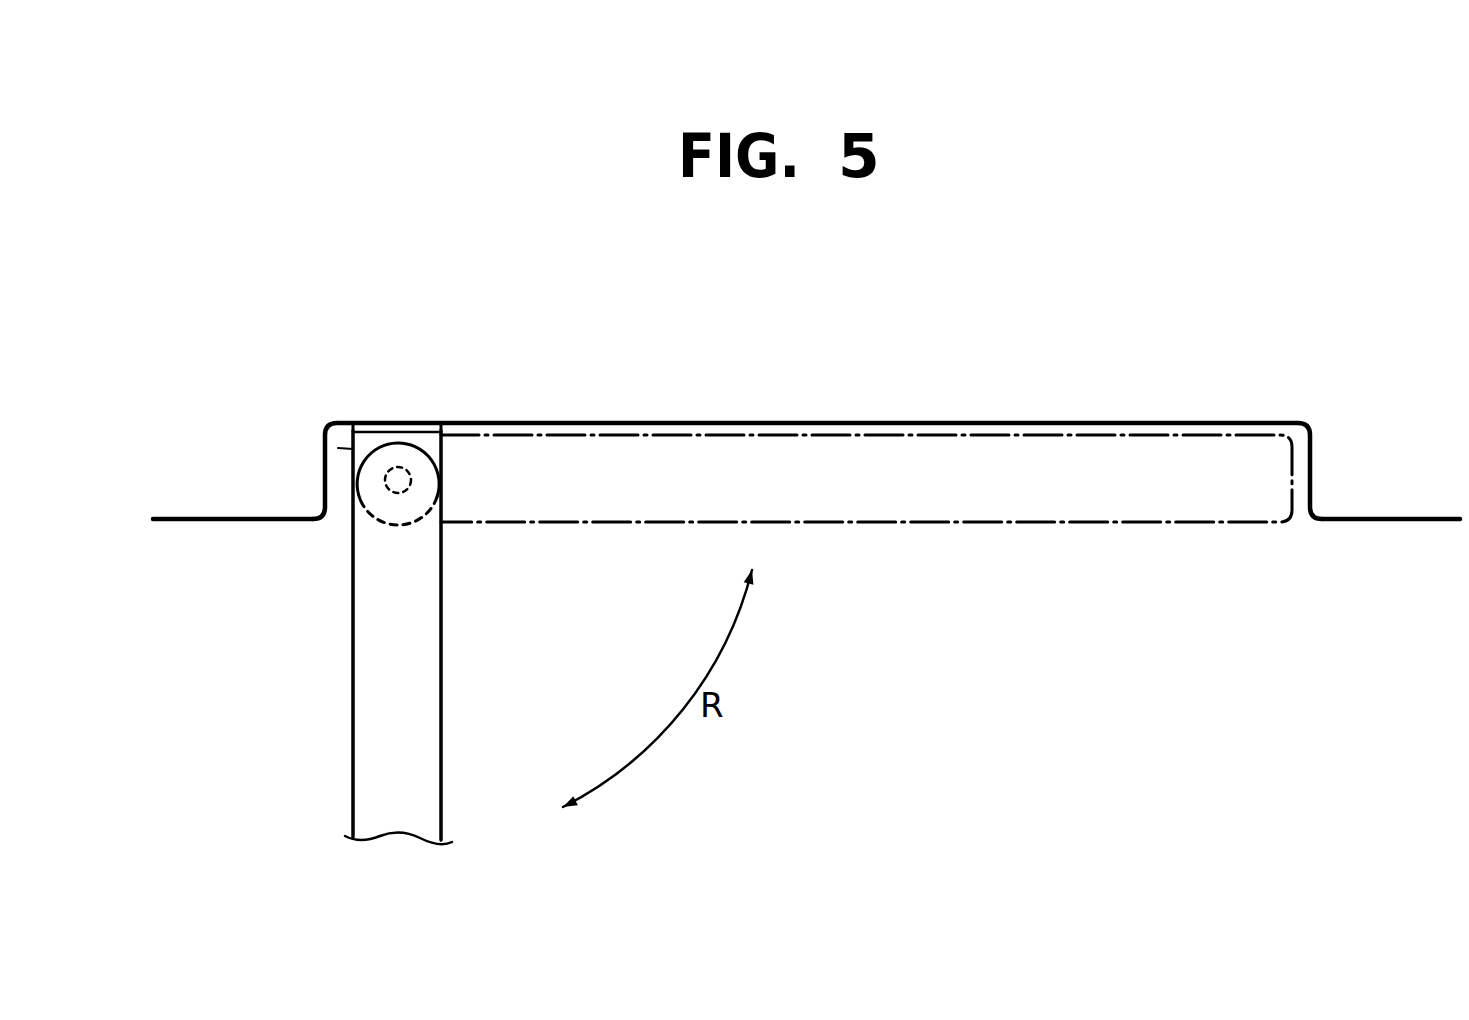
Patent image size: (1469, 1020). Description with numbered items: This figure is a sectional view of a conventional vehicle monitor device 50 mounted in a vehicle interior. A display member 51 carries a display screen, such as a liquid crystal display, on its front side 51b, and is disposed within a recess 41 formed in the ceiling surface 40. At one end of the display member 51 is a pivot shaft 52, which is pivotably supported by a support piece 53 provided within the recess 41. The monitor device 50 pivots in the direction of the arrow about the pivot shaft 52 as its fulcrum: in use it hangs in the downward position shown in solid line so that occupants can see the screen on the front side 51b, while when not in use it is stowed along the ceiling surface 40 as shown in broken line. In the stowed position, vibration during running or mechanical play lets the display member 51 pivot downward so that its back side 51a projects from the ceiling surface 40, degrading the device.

The ceiling surface 40 is at (222, 500).
The recess 41 is at (1178, 421).
The monitor device 50 is at (955, 536).
The display member 51 is at (507, 524).
The back side 51a is at (355, 748).
The front side 51b is at (442, 755).
The pivot shaft 52 is at (398, 467).
The support piece 53 is at (340, 448).